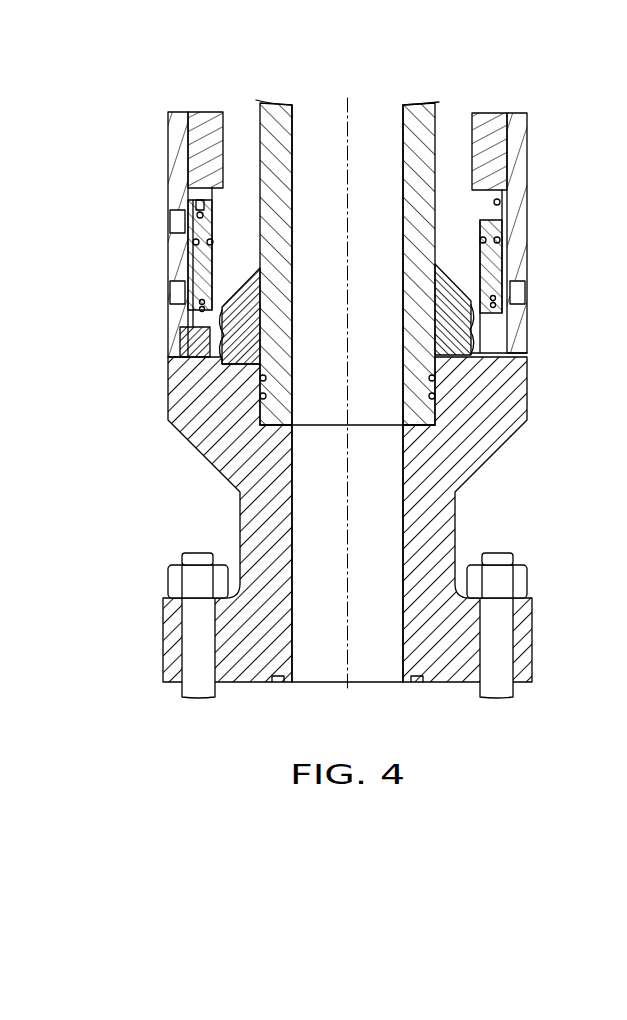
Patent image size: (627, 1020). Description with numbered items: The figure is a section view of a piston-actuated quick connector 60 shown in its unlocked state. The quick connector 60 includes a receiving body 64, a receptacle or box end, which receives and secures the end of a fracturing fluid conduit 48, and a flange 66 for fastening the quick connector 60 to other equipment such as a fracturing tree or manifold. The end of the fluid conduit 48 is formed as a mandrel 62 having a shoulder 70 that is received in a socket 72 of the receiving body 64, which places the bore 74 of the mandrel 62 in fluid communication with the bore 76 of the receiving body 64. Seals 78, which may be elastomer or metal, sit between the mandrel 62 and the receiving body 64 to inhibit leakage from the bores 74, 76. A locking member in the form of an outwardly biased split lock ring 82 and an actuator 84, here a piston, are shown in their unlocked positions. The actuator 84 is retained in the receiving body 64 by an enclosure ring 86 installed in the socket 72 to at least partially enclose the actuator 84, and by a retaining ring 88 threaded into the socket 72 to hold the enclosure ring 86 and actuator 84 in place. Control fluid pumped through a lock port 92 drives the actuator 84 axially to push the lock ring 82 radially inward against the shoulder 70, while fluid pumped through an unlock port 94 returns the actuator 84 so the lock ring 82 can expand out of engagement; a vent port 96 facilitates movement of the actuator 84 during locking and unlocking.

The piston-actuated quick connector 60 is at (60, 130).
The fluid conduit 48 is at (278, 100).
The mandrel 62 is at (425, 157).
The receiving body 64 is at (478, 445).
The flange 66 is at (522, 640).
The shoulder 70 is at (452, 282).
The socket 72 is at (229, 131).
The bore 74 is at (292, 233).
The bore 76 is at (292, 522).
The seals 78 is at (430, 379).
The lock ring 82 is at (218, 318).
The actuator 84 is at (212, 266).
The enclosure ring 86 is at (196, 197).
The retaining ring 88 is at (196, 158).
The lock port 92 is at (170, 232).
The unlock port 94 is at (170, 300).
The vent port 96 is at (183, 353).